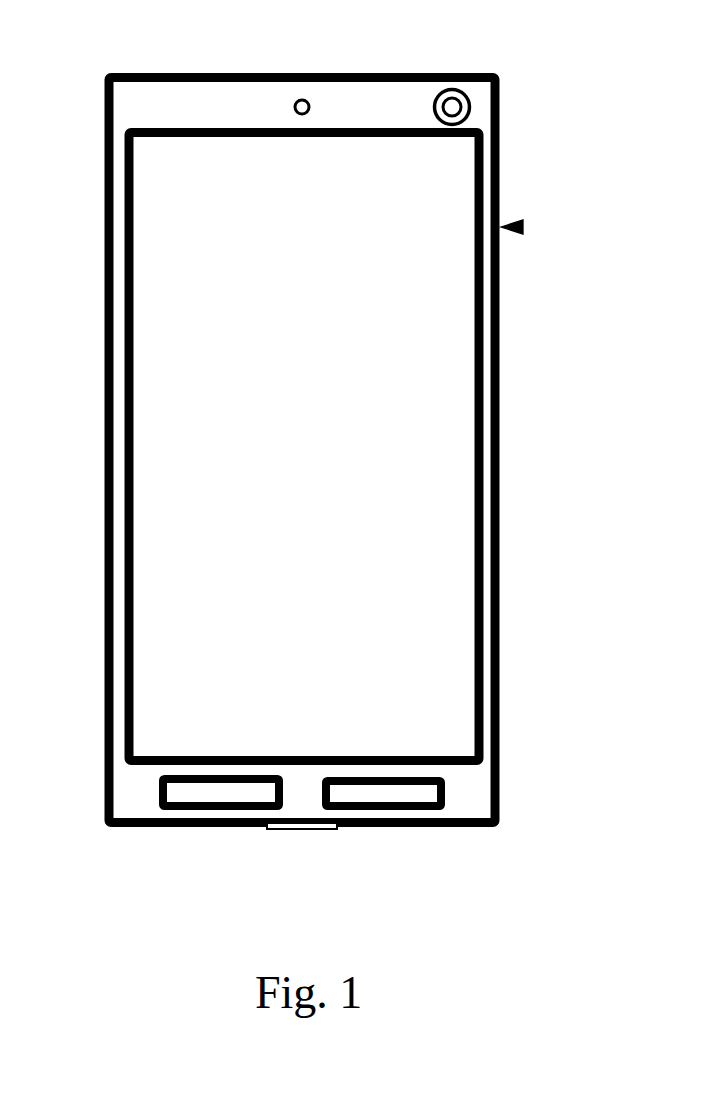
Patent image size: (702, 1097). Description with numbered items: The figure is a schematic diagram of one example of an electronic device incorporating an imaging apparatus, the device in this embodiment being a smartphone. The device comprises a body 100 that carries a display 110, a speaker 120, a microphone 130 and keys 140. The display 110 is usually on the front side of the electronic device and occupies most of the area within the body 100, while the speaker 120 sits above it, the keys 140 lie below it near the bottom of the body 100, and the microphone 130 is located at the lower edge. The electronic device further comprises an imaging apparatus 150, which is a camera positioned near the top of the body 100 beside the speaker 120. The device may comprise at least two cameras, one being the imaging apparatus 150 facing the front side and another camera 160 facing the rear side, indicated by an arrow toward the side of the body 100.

The body 100 is at (120, 108).
The display 110 is at (153, 341).
The speaker 120 is at (300, 98).
The microphone 130 is at (300, 829).
The keys 140 is at (338, 777).
The imaging apparatus 150 is at (462, 102).
The camera facing the rear side 160 is at (520, 227).